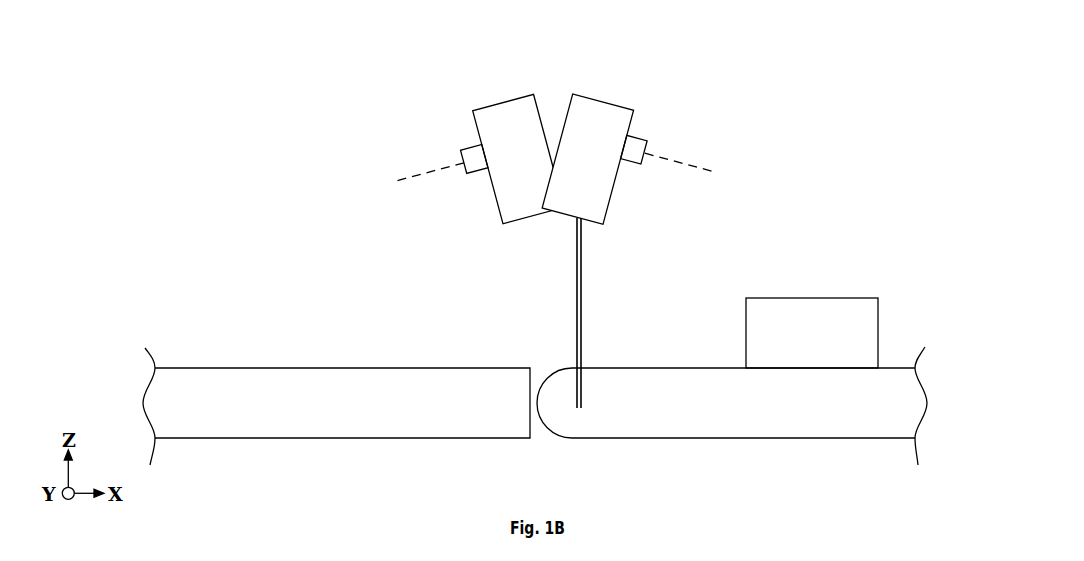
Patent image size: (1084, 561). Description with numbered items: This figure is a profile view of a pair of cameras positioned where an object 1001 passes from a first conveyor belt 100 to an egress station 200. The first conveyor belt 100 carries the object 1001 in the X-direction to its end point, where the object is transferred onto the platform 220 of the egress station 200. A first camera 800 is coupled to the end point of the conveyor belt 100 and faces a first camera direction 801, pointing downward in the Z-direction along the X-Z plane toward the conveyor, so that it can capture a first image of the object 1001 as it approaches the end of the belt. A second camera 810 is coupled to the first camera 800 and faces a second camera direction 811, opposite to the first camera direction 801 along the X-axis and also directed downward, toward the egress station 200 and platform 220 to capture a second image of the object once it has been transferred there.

The first conveyor belt 100 is at (749, 303).
The object 1001 is at (815, 298).
The egress station 200 is at (317, 309).
The platform 220 is at (438, 367).
The first camera 800 is at (642, 218).
The first camera direction 801 is at (682, 163).
The second camera 810 is at (469, 140).
The second camera direction 811 is at (432, 170).